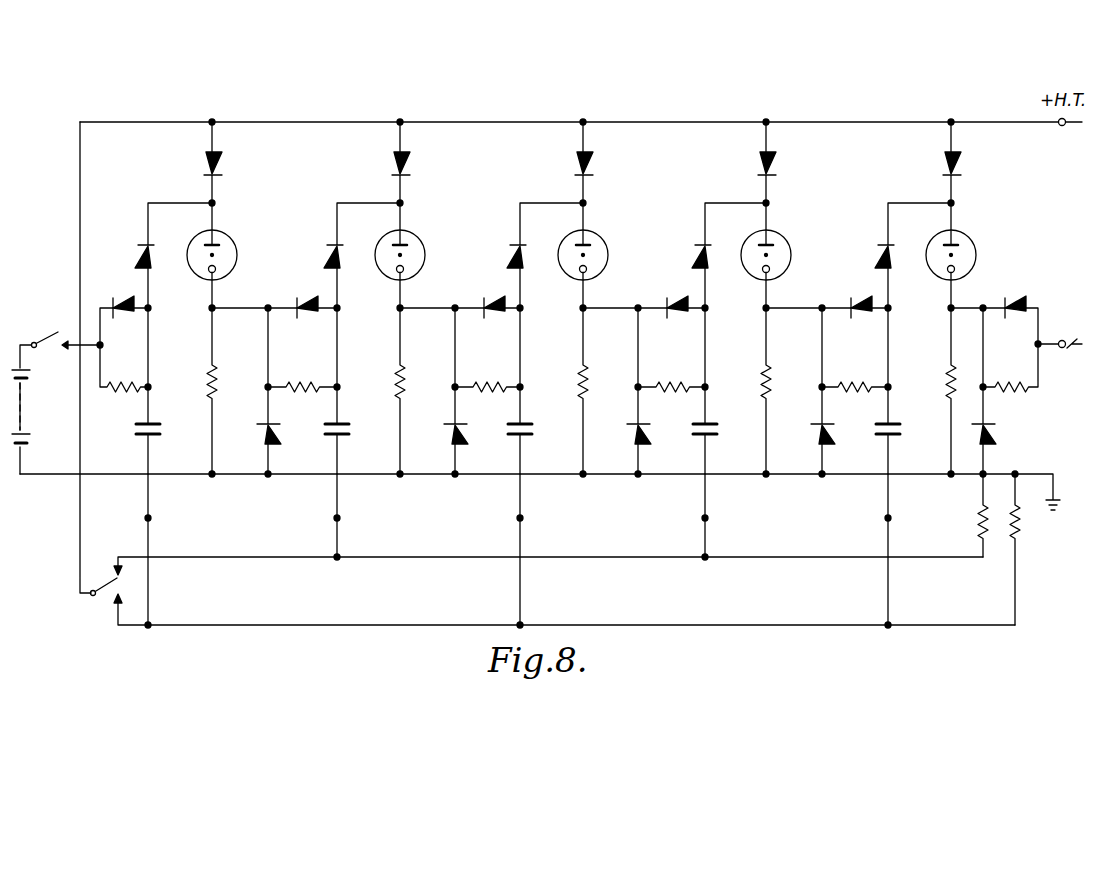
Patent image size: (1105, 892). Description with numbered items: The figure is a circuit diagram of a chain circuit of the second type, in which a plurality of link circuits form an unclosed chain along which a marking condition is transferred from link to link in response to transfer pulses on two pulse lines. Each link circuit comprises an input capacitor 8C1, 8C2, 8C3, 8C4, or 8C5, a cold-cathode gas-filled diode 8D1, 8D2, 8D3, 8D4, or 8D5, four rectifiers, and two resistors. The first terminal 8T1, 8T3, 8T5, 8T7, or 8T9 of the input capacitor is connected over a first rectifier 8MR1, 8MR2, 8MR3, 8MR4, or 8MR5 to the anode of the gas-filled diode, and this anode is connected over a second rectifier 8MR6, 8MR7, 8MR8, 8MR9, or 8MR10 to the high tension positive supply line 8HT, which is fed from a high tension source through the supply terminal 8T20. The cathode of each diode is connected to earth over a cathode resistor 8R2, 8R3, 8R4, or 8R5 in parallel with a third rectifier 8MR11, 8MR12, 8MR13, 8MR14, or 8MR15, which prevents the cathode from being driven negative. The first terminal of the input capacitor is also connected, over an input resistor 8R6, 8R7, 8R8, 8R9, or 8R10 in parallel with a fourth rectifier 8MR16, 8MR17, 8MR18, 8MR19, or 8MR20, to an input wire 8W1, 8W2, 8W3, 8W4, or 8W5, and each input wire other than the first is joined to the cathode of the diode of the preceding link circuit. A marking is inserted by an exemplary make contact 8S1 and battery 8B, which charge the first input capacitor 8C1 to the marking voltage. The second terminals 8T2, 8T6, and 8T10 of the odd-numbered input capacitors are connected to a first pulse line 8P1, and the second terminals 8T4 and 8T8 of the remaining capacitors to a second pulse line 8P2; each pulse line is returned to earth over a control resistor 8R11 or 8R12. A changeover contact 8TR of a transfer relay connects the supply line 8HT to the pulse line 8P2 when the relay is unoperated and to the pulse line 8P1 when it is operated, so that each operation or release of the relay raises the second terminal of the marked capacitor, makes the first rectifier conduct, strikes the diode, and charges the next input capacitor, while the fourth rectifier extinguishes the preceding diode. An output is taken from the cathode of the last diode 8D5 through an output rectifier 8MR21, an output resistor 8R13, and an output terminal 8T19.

The high tension positive supply line 8HT is at (292, 121).
The high tension positive supply terminal 8T20 is at (1057, 133).
The first pulse line 8P1 is at (314, 627).
The second pulse line 8P2 is at (412, 559).
The changeover contact of transfer relay 8TR is at (90, 605).
The battery 8B is at (31, 409).
The make contact 8S1 is at (46, 332).
The input wire 8W1 is at (87, 348).
The input wire 8W2 is at (256, 296).
The input wire 8W3 is at (420, 311).
The input wire 8W4 is at (604, 311).
The input wire 8W5 is at (787, 311).
The first rectifier 8MR1 is at (149, 254).
The first rectifier 8MR2 is at (332, 254).
The first rectifier 8MR3 is at (519, 254).
The first rectifier 8MR4 is at (703, 254).
The first rectifier 8MR5 is at (888, 254).
The second rectifier 8MR6 is at (241, 161).
The second rectifier 8MR7 is at (429, 161).
The second rectifier 8MR8 is at (613, 161).
The second rectifier 8MR9 is at (795, 161).
The second rectifier 8MR10 is at (986, 161).
The third rectifier 8MR11 is at (277, 434).
The third rectifier 8MR12 is at (464, 434).
The third rectifier 8MR13 is at (648, 434).
The third rectifier 8MR14 is at (832, 434).
The third rectifier 8MR15 is at (989, 437).
The fourth rectifier 8MR16 is at (116, 310).
The fourth rectifier 8MR17 is at (302, 297).
The fourth rectifier 8MR18 is at (486, 297).
The fourth rectifier 8MR19 is at (670, 297).
The fourth rectifier 8MR20 is at (854, 297).
The output rectifier 8MR21 is at (1001, 310).
The cold-cathode gas-filled diode 8D1 is at (221, 255).
The cold-cathode gas-filled diode 8D2 is at (410, 255).
The cold-cathode gas-filled diode 8D3 is at (594, 255).
The cold-cathode gas-filled diode 8D4 is at (777, 255).
The cold-cathode gas-filled diode 8D5 is at (963, 255).
The cathode resistor 8R2 is at (420, 391).
The cathode resistor 8R3 is at (604, 391).
The cathode resistor 8R4 is at (787, 391).
The cathode resistor 8R5 is at (932, 391).
The input resistor 8R6 is at (122, 367).
The input resistor 8R7 is at (236, 384).
The input resistor 8R8 is at (487, 374).
The input resistor 8R9 is at (671, 374).
The input resistor 8R10 is at (855, 374).
The control resistor 8R11 is at (1040, 548).
The control resistor 8R12 is at (975, 528).
The output resistor 8R13 is at (1009, 368).
The input capacitor 8C1 is at (161, 389).
The input capacitor 8C2 is at (352, 389).
The input capacitor 8C3 is at (535, 389).
The input capacitor 8C4 is at (719, 389).
The input capacitor 8C5 is at (903, 389).
The first terminal of input capacitor 8T1 is at (150, 385).
The second terminal of input capacitor 8T2 is at (150, 520).
The first terminal of input capacitor 8T3 is at (339, 385).
The second terminal of input capacitor 8T4 is at (339, 520).
The first terminal of input capacitor 8T5 is at (522, 385).
The second terminal of input capacitor 8T6 is at (522, 520).
The first terminal of input capacitor 8T7 is at (707, 385).
The second terminal of input capacitor 8T8 is at (707, 520).
The first terminal of input capacitor 8T9 is at (890, 386).
The second terminal of input capacitor 8T10 is at (890, 520).
The output terminal 8T19 is at (1059, 332).